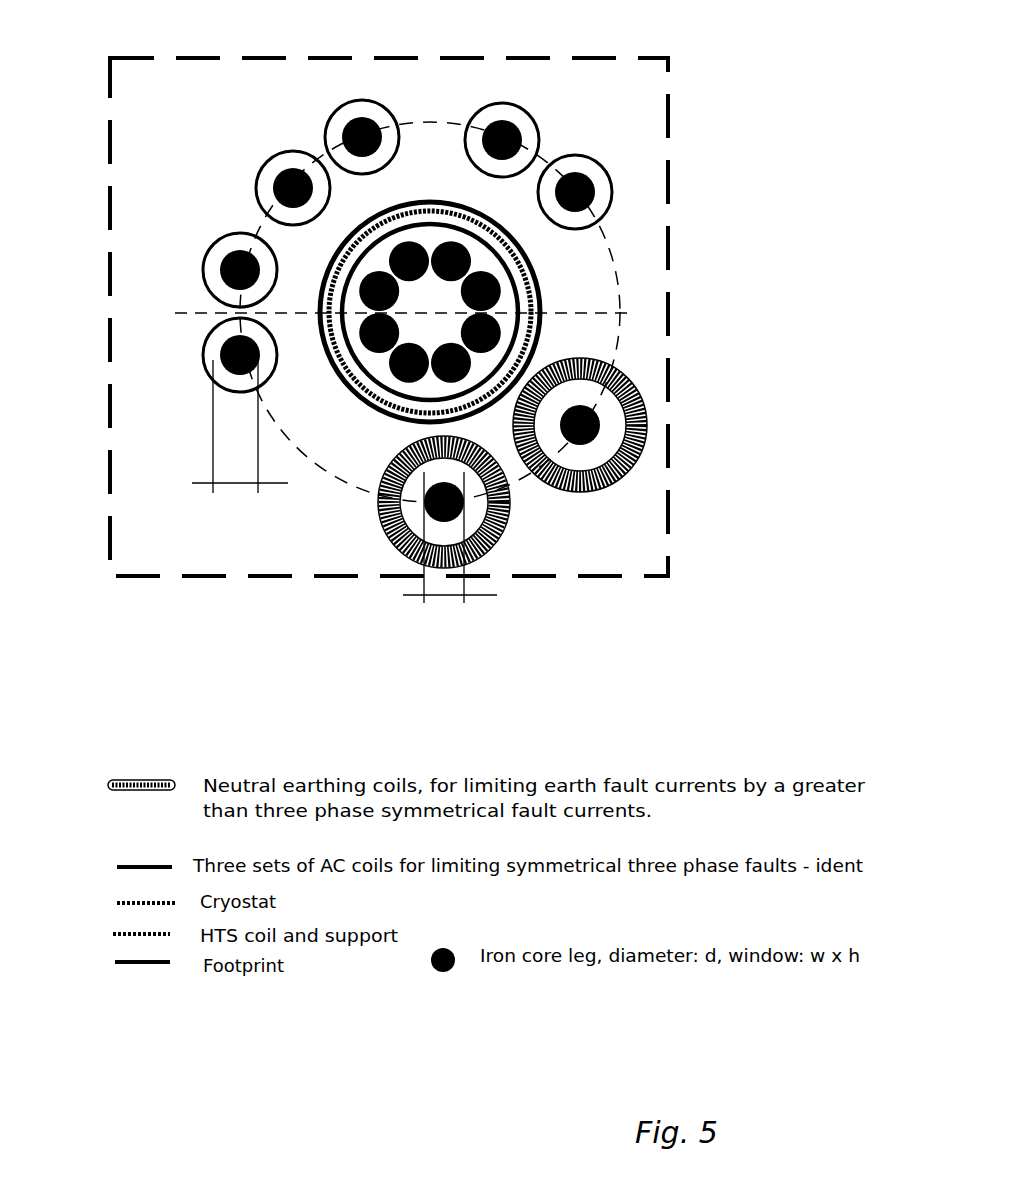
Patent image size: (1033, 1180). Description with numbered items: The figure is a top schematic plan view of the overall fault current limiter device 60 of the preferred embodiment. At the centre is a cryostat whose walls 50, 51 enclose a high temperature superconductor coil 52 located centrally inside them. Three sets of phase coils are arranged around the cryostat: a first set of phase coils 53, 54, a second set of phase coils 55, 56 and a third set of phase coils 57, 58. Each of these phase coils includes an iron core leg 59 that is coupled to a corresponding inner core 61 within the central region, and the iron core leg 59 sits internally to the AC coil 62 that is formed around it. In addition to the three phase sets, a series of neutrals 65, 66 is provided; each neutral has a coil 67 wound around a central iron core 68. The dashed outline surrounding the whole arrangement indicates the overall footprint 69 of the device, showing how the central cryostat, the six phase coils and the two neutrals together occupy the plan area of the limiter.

The cryostat wall 50 is at (537, 283).
The cryostat wall 51 is at (537, 303).
The high temperature superconductor coil 52 is at (537, 330).
The first set phase coil 53 is at (196, 358).
The first set phase coil 54 is at (188, 266).
The second set phase coil 55 is at (254, 156).
The second set phase coil 56 is at (331, 106).
The third set phase coil 57 is at (538, 112).
The third set phase coil 58 is at (611, 153).
The iron core leg 59 is at (232, 373).
The fault current limiter arrangement 60 is at (749, 41).
The inner core 61 is at (365, 345).
The AC coil 62 is at (233, 392).
The neutral 65 is at (641, 466).
The neutral 66 is at (383, 544).
The neutral coil 67 is at (643, 400).
The central iron core 68 is at (580, 440).
The overall footprint 69 is at (655, 575).